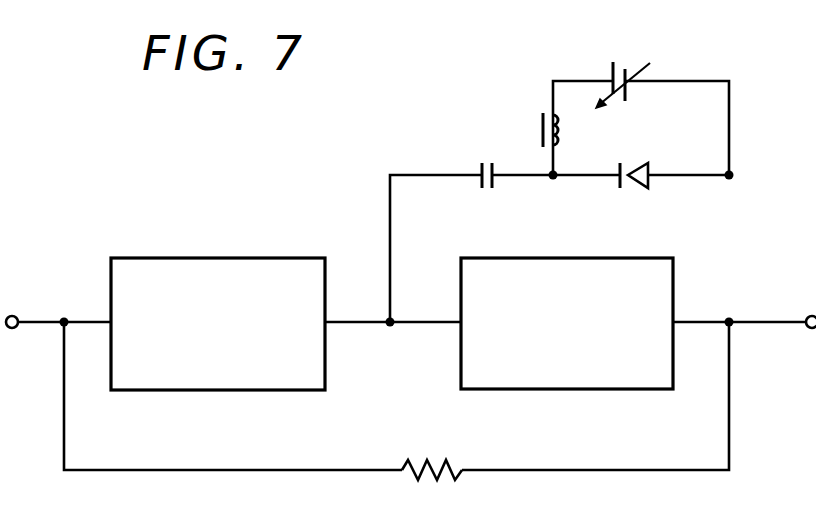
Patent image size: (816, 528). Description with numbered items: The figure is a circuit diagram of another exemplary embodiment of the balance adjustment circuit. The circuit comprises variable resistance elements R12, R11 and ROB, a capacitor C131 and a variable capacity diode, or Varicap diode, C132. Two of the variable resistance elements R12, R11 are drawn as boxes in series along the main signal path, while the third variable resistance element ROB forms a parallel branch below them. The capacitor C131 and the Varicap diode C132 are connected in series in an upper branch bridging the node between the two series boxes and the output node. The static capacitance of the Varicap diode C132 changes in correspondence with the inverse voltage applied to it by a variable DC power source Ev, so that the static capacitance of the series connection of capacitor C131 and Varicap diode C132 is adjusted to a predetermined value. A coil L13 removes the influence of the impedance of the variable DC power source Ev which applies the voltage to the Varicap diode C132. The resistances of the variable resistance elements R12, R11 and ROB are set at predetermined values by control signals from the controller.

The variable resistance element R12 is at (227, 258).
The variable resistance element R11 is at (584, 258).
The variable resistance element ROB is at (433, 459).
The capacitor C131 is at (483, 161).
The variable capacity diode C132 is at (638, 160).
The coil L13 is at (537, 127).
The variable DC power source Ev is at (622, 68).